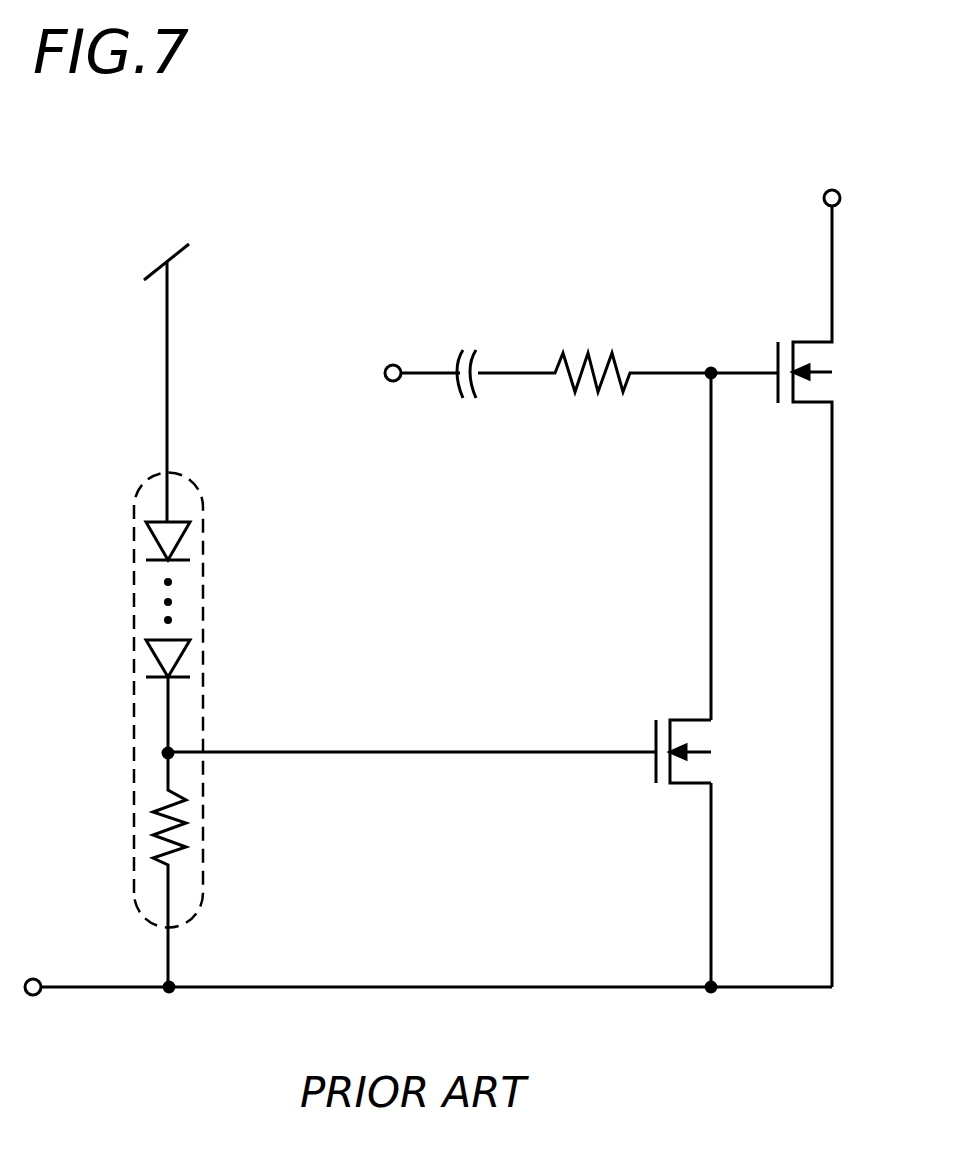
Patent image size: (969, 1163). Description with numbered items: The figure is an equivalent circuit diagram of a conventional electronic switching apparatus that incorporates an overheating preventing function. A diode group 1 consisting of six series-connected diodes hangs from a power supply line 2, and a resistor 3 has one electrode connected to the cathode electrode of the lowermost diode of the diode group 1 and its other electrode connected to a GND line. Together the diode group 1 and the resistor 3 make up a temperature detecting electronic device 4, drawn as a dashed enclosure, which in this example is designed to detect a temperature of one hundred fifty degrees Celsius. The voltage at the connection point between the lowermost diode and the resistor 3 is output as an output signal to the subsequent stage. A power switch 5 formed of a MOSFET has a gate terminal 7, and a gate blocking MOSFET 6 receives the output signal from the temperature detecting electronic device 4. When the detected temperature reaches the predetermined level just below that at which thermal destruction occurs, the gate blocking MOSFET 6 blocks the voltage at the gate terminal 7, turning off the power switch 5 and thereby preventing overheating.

The diode group 1 is at (152, 592).
The power supply line 2 is at (165, 250).
The resistor 3 is at (150, 825).
The temperature detecting electronic device 4 is at (203, 505).
The power switch 5 is at (795, 328).
The gate blocking MOSFET 6 is at (650, 738).
The gate terminal 7 is at (753, 358).